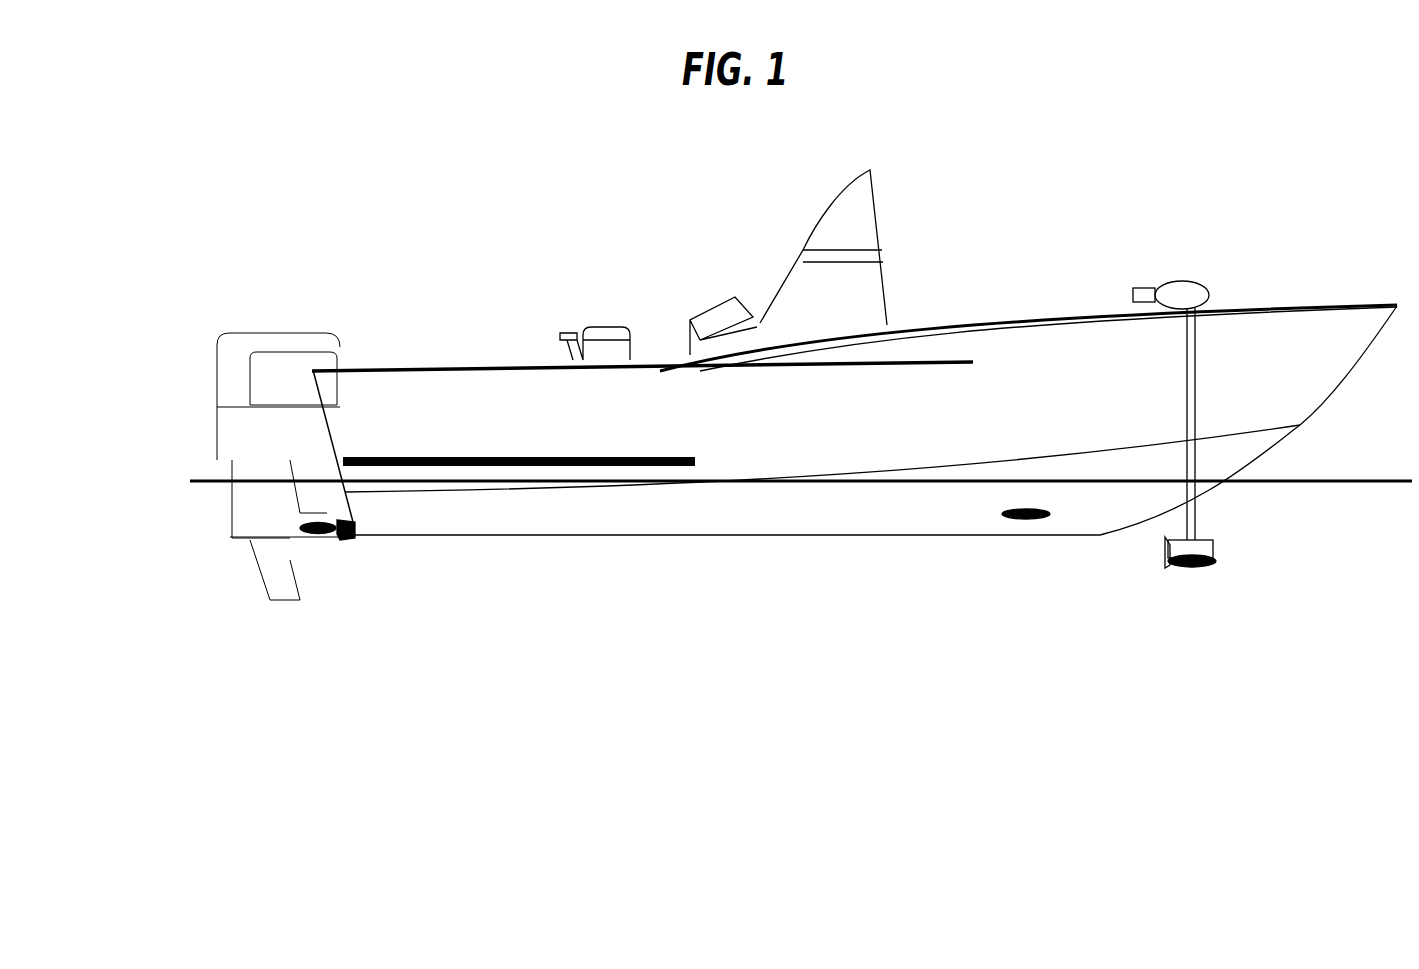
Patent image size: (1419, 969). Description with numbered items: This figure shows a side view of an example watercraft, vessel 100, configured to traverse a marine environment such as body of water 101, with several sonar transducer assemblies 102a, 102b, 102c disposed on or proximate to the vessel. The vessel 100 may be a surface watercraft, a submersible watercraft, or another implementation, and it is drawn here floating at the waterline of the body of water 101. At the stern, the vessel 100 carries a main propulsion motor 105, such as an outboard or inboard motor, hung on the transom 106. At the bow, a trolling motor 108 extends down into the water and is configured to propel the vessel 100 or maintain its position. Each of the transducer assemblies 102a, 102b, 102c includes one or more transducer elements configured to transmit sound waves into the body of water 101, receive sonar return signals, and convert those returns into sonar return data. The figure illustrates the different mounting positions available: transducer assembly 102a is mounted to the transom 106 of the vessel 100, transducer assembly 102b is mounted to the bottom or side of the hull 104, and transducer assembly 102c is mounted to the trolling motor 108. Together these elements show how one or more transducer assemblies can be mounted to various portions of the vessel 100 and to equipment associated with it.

The vessel 100 is at (1038, 320).
The body of water 101 is at (783, 637).
The transducer assembly 102a is at (325, 533).
The transducer assembly 102b is at (1023, 518).
The transducer assembly 102c is at (1195, 567).
The hull 104 is at (627, 527).
The main propulsion motor 105 is at (252, 330).
The transom 106 is at (322, 403).
The trolling motor 108 is at (1210, 545).